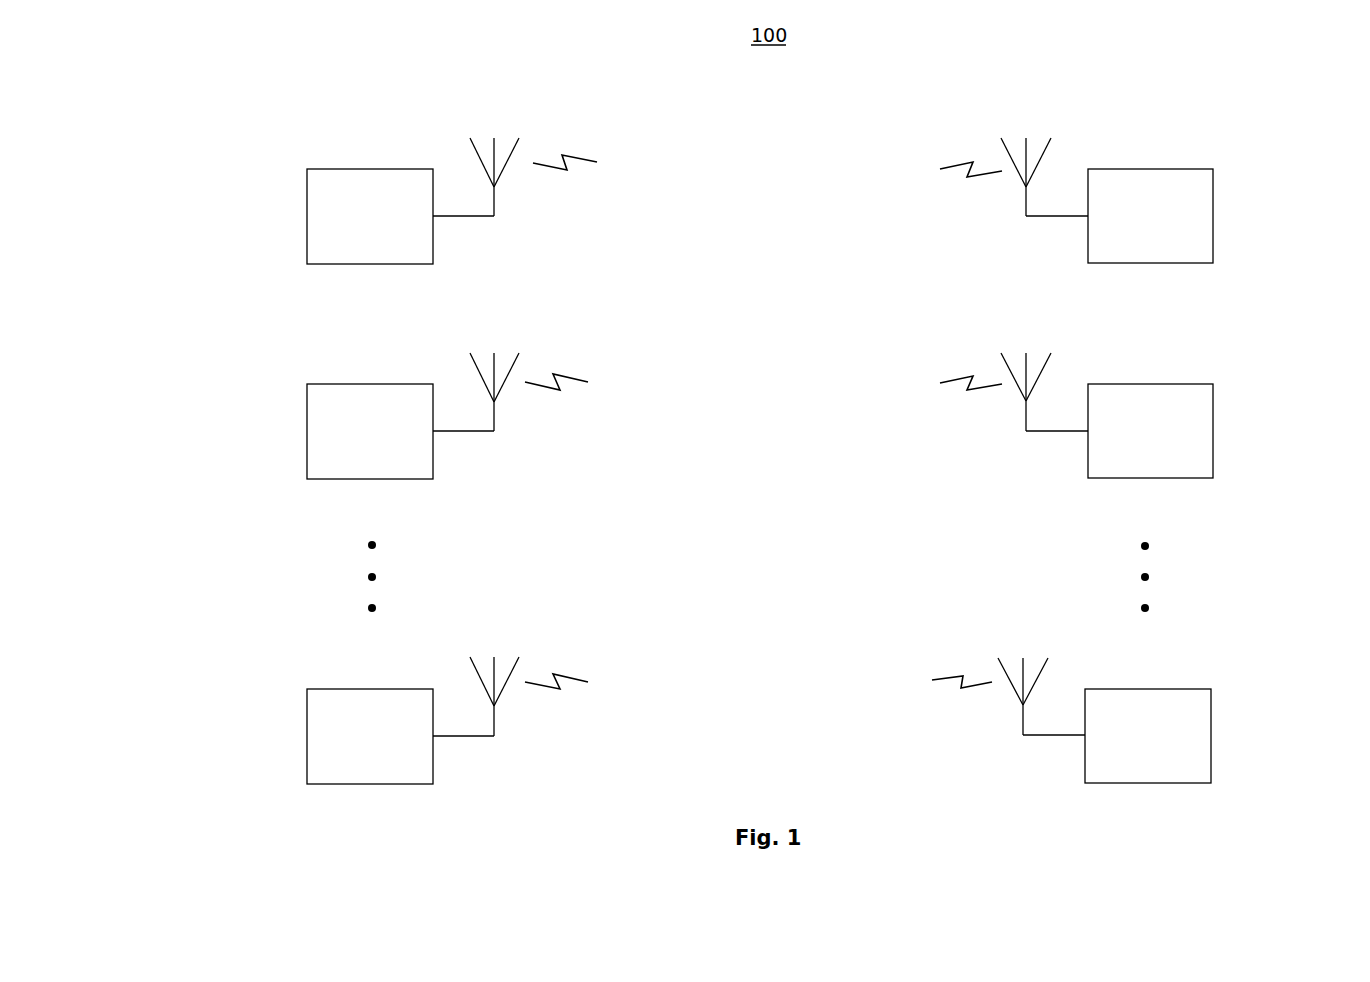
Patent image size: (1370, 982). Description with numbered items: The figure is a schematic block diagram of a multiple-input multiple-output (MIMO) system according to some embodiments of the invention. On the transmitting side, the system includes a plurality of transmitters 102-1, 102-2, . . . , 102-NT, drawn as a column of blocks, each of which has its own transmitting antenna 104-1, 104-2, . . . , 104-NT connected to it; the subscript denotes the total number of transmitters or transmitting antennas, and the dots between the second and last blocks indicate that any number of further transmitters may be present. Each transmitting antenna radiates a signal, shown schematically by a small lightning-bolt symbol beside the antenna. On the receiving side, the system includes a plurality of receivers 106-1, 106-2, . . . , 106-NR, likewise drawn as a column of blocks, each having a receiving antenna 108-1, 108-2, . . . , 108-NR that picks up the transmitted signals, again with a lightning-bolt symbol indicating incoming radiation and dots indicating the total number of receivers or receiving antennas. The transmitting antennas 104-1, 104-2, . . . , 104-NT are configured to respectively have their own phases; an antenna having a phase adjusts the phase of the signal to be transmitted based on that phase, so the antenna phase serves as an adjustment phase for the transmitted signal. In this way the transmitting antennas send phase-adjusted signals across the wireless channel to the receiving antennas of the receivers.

The transmitter 102-1 is at (307, 215).
The transmitter 102-2 is at (307, 430).
The transmitter 102-NT is at (307, 735).
The transmitting antenna 104-1 is at (502, 137).
The transmitting antenna 104-2 is at (502, 352).
The transmitting antenna 104-NT is at (502, 656).
The receiver 106-1 is at (1213, 216).
The receiver 106-2 is at (1213, 431).
The receiver 106-NR is at (1211, 735).
The receiving antenna 108-1 is at (1037, 135).
The receiving antenna 108-2 is at (1037, 350).
The receiving antenna 108-NR is at (1033, 657).